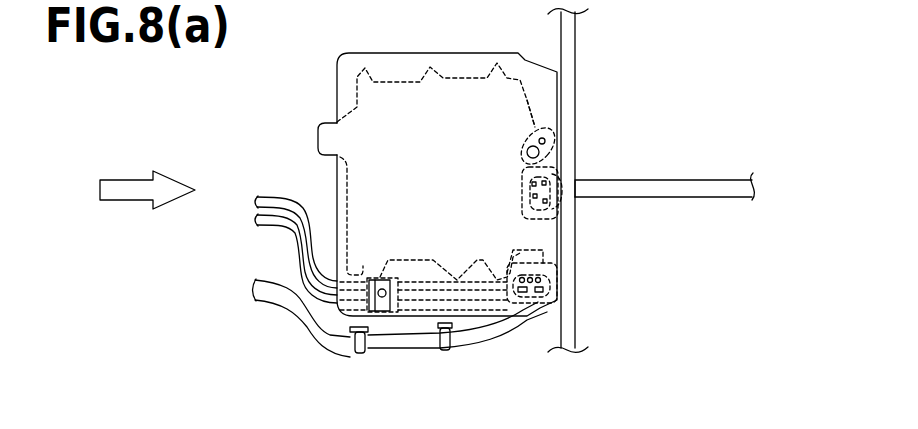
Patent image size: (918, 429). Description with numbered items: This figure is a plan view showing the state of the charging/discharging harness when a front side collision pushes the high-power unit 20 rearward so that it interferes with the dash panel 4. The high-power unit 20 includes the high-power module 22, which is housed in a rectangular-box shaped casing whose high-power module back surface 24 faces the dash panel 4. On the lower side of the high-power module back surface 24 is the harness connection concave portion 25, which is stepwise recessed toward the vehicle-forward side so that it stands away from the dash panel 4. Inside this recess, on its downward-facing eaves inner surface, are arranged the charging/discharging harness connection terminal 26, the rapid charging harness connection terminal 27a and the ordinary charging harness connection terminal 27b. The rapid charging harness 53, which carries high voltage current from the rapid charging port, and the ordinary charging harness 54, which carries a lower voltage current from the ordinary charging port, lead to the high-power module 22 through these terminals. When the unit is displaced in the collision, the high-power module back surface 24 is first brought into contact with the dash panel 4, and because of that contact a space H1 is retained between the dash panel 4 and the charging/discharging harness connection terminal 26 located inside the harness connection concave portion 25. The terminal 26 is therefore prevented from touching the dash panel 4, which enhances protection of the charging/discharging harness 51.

The high-power unit 20 is at (387, 53).
The high-power module 22 is at (436, 169).
The charging/discharging harness connection terminal 26 is at (530, 197).
The ordinary charging harness connection terminal 27b is at (542, 127).
The high-power module back surface 24 is at (558, 90).
The harness connection concave portion 25 is at (550, 112).
The space H1 is at (562, 196).
The dash panel 4 is at (577, 235).
The charging/discharging harness 51 is at (693, 198).
The rapid charging harness connection terminal 27a is at (547, 300).
The rapid charging harness 53 is at (473, 303).
The ordinary charging harness 54 is at (510, 333).